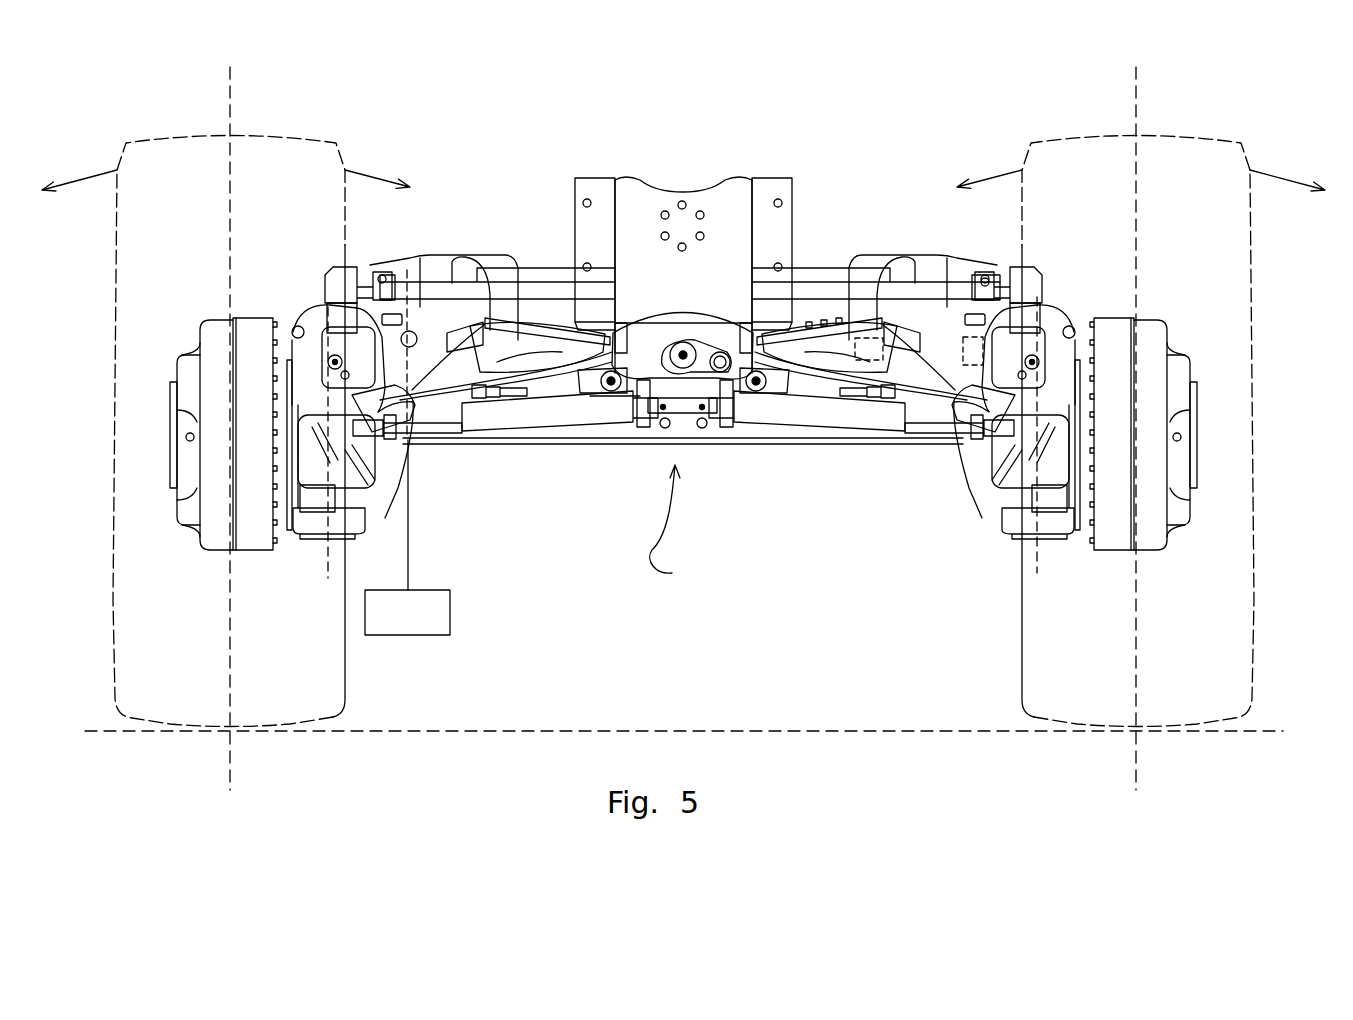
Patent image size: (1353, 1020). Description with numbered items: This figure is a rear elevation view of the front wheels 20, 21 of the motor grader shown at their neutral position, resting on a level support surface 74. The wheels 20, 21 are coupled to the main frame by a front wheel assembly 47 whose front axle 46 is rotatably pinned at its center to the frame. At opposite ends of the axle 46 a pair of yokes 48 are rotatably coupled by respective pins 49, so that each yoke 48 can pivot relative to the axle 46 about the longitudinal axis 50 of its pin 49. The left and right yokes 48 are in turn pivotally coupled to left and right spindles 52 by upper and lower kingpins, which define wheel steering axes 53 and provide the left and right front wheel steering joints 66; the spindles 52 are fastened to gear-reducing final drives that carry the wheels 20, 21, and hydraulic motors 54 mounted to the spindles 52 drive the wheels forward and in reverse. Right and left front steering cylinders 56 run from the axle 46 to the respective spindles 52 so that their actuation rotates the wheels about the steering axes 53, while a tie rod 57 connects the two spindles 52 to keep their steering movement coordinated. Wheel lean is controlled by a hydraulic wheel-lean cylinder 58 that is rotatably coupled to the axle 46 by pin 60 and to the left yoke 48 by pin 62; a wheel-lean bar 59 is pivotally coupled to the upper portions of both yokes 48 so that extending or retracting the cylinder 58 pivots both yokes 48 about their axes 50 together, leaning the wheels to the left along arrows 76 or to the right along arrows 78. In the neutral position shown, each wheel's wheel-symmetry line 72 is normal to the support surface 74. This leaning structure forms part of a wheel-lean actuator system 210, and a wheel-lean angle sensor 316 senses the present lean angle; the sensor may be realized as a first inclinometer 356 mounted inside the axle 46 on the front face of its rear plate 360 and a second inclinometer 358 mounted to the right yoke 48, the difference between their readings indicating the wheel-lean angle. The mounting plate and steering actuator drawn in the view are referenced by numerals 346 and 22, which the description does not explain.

The front wheel 20 is at (345, 672).
The front wheel 21 is at (1022, 665).
The steering actuator 22 is at (743, 442).
The front axle 46 is at (913, 313).
The front wheel assembly 47 is at (678, 525).
The yoke 48 is at (380, 507).
The pin 49 is at (440, 440).
The longitudinal axis 50 is at (427, 447).
The spindle 52 is at (317, 320).
The wheel steering axis 53 is at (328, 557).
The hydraulic motor 54 is at (293, 327).
The front steering cylinder 56 is at (570, 423).
The tie rod 57 is at (447, 300).
The wheel-lean cylinder 58 is at (508, 345).
The wheel-lean bar 59 is at (403, 263).
The pin 60 is at (600, 400).
The pin 62 is at (412, 335).
The front wheel steering joint 66 is at (310, 307).
The wheel-symmetry line 72 is at (230, 83).
The support surface 74 is at (755, 731).
The left arrows 76 is at (80, 176).
The right arrows 78 is at (365, 168).
The wheel-lean actuator system 210 is at (490, 186).
The wheel-lean angle sensor 316 is at (450, 621).
The mounting plate 346 is at (730, 203).
The first inclinometer 356 is at (872, 340).
The second inclinometer 358 is at (945, 307).
The rear plate 360 is at (818, 353).